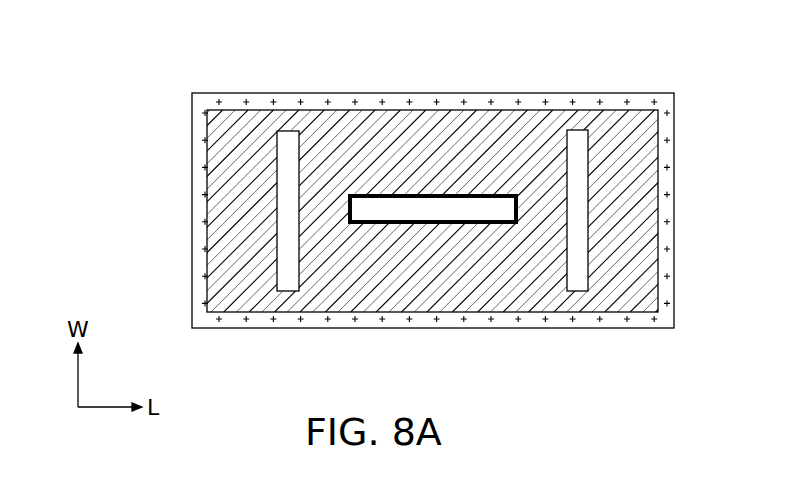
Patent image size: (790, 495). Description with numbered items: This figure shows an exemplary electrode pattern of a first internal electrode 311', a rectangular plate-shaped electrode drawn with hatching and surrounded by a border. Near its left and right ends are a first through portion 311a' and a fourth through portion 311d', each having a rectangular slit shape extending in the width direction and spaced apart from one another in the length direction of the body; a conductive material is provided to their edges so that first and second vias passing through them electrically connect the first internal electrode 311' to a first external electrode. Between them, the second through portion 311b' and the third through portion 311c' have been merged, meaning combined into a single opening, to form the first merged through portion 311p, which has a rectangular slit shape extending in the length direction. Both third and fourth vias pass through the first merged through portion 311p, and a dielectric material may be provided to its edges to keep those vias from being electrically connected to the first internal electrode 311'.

The first internal electrode 311' is at (399, 210).
The first through portion 311a' is at (289, 168).
The second through portion 311b' is at (391, 102).
The third through portion 311c' is at (474, 102).
The fourth through portion 311d' is at (579, 167).
The first merged through portion 311p is at (424, 194).